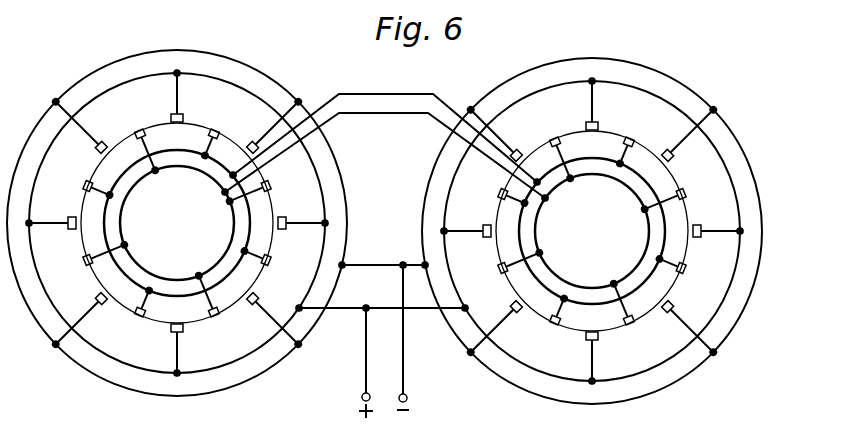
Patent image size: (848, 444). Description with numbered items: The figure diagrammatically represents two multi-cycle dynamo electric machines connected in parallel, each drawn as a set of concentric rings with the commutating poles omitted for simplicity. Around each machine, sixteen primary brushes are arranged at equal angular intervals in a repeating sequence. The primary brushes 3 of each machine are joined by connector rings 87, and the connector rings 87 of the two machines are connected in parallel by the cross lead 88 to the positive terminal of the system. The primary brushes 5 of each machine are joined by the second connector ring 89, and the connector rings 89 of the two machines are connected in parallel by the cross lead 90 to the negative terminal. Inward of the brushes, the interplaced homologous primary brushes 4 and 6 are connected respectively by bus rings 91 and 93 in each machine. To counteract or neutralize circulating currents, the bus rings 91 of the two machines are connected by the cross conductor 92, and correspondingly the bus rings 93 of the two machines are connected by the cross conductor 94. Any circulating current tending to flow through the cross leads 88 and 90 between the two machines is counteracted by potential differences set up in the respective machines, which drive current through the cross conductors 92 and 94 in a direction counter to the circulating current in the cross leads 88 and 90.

The primary brushes 3 is at (384, 227).
The primary brushes 4 is at (384, 227).
The primary brushes 5 is at (384, 226).
The primary brushes 6 is at (384, 226).
The connector rings 87 is at (240, 88).
The cross lead 88 is at (338, 311).
The second connector ring 89 is at (212, 53).
The cross lead 90 is at (367, 263).
The bus rings 91 is at (137, 283).
The cross conductor 92 is at (392, 93).
The bus rings 93 is at (130, 255).
The cross conductor 94 is at (370, 115).